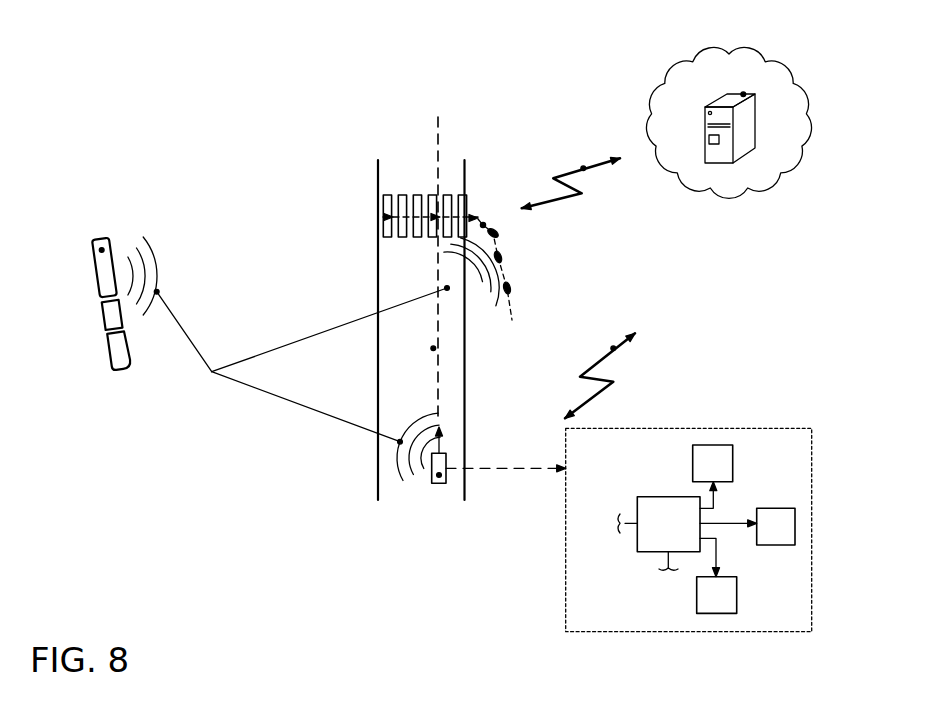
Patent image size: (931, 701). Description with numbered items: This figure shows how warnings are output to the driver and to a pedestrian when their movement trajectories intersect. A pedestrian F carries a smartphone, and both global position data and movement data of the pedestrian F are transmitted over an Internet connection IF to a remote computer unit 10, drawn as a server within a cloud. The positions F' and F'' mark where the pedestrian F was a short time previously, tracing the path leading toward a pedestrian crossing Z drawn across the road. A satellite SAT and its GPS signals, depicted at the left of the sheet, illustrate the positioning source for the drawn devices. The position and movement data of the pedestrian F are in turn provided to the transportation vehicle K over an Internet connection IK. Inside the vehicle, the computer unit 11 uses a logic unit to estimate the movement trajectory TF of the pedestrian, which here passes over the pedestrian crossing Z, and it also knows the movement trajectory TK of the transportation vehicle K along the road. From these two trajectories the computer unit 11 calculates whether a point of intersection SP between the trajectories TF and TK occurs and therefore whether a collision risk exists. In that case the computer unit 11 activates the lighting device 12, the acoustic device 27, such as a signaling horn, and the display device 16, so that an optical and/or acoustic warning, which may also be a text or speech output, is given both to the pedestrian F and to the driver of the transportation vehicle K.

The satellite SAT is at (102, 250).
The GPS positioning signals GPS is at (300, 366).
The pedestrian crossing Z is at (387, 217).
The point of intersection SP is at (438, 215).
The movement trajectory of the pedestrian TF is at (483, 225).
The pedestrian F is at (506, 207).
The previous position of the pedestrian F' is at (517, 241).
The previous position of the pedestrian F'' is at (534, 295).
The Internet connection IF is at (583, 168).
The remote computer unit 10 is at (743, 94).
The movement trajectory of the transportation vehicle TK is at (433, 348).
The transportation vehicle K is at (439, 475).
The Internet connection IK is at (613, 348).
The computer unit 11 is at (659, 534).
The lighting device 12 is at (713, 476).
The acoustic device 27 is at (747, 526).
The display device 16 is at (717, 575).